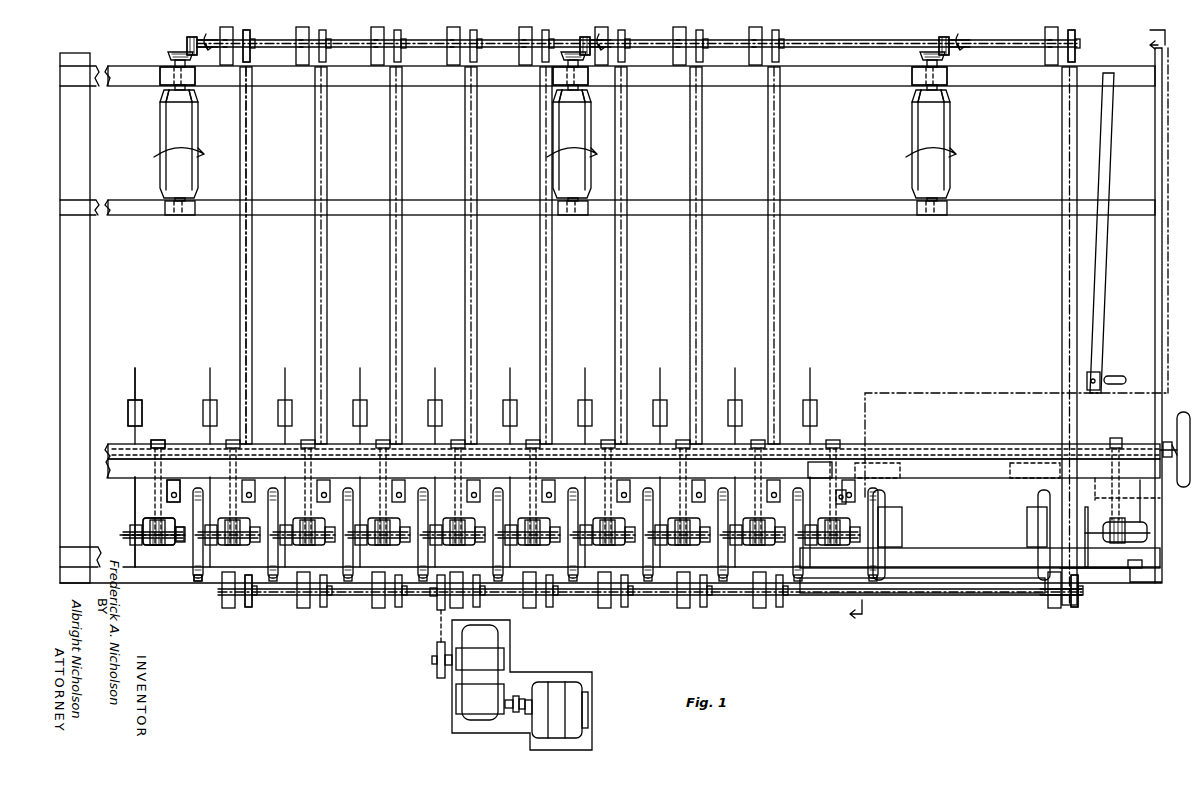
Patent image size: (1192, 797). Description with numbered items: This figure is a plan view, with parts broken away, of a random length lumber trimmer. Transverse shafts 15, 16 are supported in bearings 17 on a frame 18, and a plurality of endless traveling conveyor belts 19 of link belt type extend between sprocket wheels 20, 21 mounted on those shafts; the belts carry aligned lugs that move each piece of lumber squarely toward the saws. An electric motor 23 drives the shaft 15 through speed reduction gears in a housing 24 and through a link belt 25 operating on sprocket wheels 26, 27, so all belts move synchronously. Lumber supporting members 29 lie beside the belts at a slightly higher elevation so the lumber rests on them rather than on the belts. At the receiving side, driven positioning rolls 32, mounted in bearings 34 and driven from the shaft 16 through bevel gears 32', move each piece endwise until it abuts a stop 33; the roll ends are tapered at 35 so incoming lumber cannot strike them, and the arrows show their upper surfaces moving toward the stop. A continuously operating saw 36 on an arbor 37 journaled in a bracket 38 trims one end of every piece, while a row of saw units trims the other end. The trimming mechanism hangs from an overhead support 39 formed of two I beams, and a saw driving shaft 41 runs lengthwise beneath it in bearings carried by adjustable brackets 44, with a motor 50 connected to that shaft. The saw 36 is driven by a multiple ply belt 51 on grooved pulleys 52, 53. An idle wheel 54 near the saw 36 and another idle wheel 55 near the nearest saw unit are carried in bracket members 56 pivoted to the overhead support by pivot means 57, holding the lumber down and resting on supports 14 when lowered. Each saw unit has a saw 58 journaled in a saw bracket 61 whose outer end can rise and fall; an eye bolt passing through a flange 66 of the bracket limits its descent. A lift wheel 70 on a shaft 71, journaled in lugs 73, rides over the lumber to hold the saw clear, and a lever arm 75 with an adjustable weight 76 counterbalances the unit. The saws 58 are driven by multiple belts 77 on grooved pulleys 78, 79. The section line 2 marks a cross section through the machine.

The section line 2 is at (1007, 324).
The support 14 is at (902, 525).
The transverse shaft 15 is at (655, 598).
The transverse shaft 16 is at (838, 47).
The bearing 17 is at (446, 30).
The frame 18 is at (92, 203).
The endless traveling conveyor belt 19 is at (321, 270).
The sprocket wheel 20 is at (249, 610).
The sprocket wheel 21 is at (250, 32).
The electric motor 23 is at (556, 740).
The housing 24 is at (470, 704).
The link belt 25 is at (440, 636).
The sprocket wheel 26 is at (437, 670).
The sprocket wheel 27 is at (436, 608).
The lumber supporting member 29 is at (314, 236).
The driven positioning roll 32 is at (550, 124).
The bevel gear 32' is at (553, 35).
The stop 33 is at (1106, 148).
The bearing 34 is at (162, 70).
The tapered end 35 is at (165, 100).
The continuously operating saw 36 is at (1088, 567).
The arbor 37 is at (1132, 568).
The bracket 38 is at (1128, 515).
The overhead support 39 is at (816, 462).
The saw driving shaft 41 is at (940, 444).
The bracket 44 is at (172, 480).
The motor 50 is at (1183, 412).
The multiple ply belt 51 is at (1160, 498).
The grooved belt pulley 52 is at (1147, 535).
The grooved belt pulley 53 is at (1120, 438).
The idle wheel 54 is at (1048, 600).
The idle wheel 55 is at (880, 558).
The bracket member 56 is at (886, 495).
The pivot means 57 is at (898, 463).
The saw 58 is at (270, 553).
The saw bracket 61 is at (255, 490).
The flange 66 is at (836, 500).
The lift wheel 70 is at (198, 583).
The shaft 71 is at (135, 535).
The lug 73 is at (180, 544).
The lever arm 75 is at (210, 378).
The weight 76 is at (143, 410).
The multiple belt 77 is at (372, 470).
The grooved belt pulley 78 is at (172, 560).
The grooved belt pulley 79 is at (160, 440).